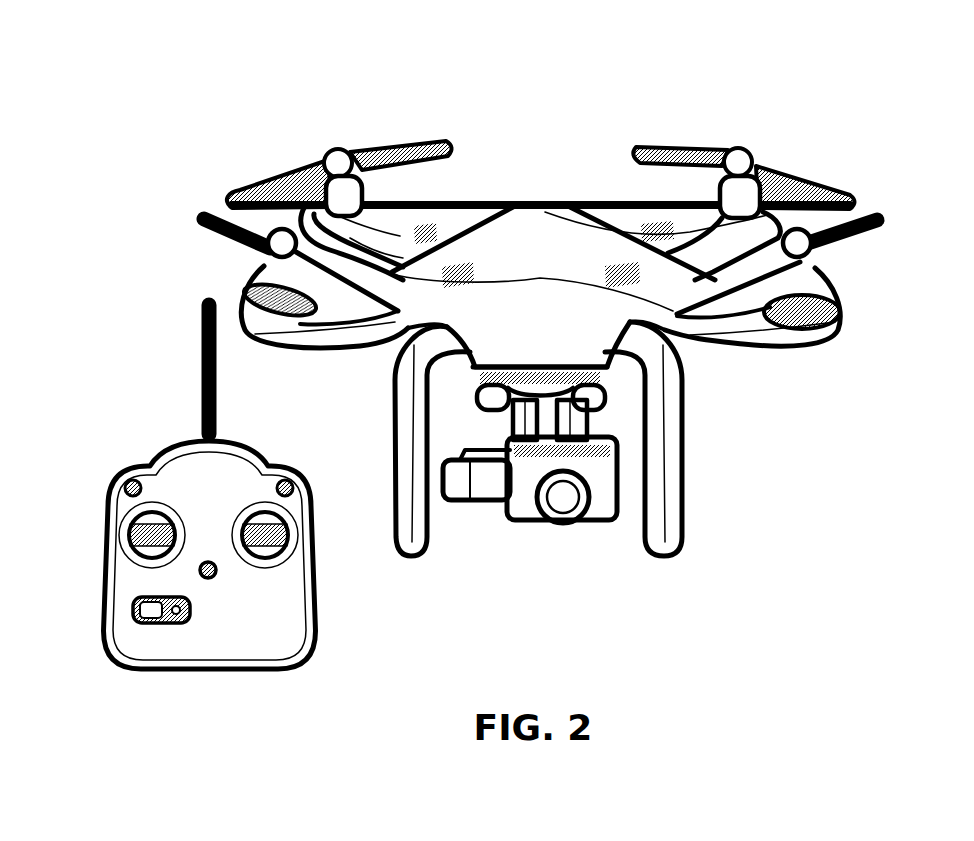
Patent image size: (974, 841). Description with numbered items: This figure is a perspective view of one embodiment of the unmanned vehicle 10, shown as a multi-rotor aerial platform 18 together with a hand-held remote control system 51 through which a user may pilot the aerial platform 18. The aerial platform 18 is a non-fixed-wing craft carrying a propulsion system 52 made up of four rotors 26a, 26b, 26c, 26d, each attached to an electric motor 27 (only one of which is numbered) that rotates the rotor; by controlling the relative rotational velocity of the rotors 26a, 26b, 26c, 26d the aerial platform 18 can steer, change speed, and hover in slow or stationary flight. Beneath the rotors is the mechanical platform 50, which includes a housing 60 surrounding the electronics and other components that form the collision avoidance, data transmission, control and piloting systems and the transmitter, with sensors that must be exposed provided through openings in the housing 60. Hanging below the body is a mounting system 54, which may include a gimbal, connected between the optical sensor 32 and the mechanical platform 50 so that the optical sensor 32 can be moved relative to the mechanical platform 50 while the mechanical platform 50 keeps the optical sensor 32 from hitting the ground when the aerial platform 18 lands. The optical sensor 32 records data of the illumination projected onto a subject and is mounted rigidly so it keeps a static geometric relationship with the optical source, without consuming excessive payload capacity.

The unmanned vehicle 10 is at (765, 30).
The aerial platform 18 is at (797, 350).
The rotor 26a is at (264, 180).
The rotor 26b is at (815, 182).
The rotor 26c is at (852, 242).
The rotor 26d is at (207, 223).
The electric motor 27 is at (716, 193).
The optical sensor 32 is at (523, 521).
The mechanical platform 50 is at (684, 527).
The remote control system 51 is at (317, 600).
The propulsion system 52 is at (822, 142).
The mounting system 54 is at (608, 400).
The housing 60 is at (540, 212).